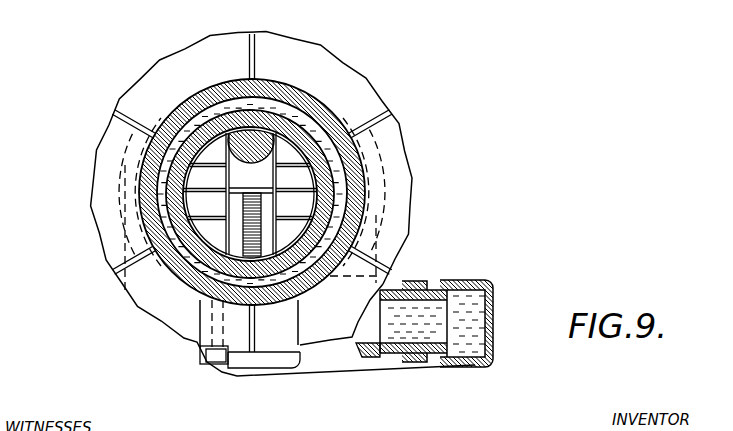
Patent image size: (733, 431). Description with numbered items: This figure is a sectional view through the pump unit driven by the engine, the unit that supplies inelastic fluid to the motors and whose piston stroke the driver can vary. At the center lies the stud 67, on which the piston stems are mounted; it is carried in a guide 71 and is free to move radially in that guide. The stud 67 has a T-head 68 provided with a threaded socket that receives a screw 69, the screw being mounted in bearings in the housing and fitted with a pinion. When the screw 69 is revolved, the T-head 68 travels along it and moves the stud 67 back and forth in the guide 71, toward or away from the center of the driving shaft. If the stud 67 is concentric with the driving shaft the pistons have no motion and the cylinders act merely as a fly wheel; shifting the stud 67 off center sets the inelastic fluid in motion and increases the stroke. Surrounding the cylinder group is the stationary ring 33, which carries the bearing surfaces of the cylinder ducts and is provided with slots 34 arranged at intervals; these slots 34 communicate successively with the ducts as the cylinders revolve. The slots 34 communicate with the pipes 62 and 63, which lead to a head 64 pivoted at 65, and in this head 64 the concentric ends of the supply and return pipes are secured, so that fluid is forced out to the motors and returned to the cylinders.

The slots 34 is at (155, 142).
The stationary ring 33 is at (147, 190).
The stud 67 is at (258, 140).
The guide 71 is at (302, 146).
The T-head 68 is at (240, 180).
The screw 69 is at (238, 226).
The pipe 62 is at (160, 328).
The pivot 65 is at (212, 360).
The head 64 is at (250, 367).
The pipe 63 is at (352, 333).